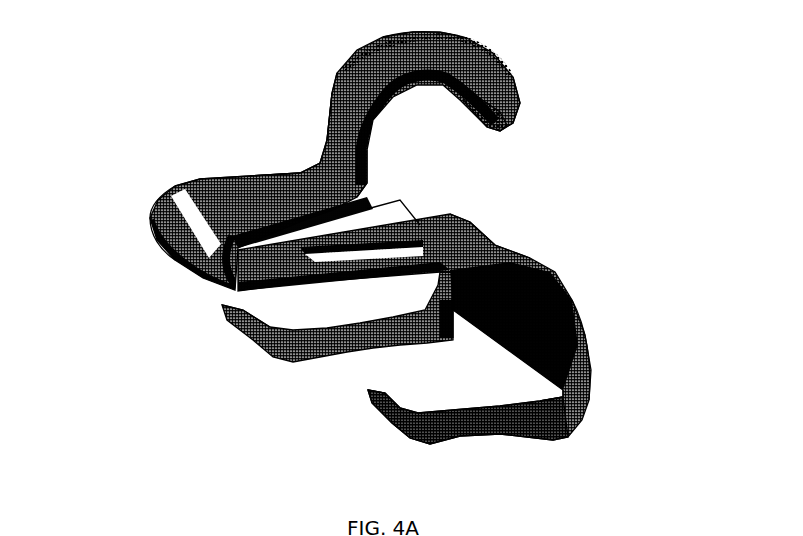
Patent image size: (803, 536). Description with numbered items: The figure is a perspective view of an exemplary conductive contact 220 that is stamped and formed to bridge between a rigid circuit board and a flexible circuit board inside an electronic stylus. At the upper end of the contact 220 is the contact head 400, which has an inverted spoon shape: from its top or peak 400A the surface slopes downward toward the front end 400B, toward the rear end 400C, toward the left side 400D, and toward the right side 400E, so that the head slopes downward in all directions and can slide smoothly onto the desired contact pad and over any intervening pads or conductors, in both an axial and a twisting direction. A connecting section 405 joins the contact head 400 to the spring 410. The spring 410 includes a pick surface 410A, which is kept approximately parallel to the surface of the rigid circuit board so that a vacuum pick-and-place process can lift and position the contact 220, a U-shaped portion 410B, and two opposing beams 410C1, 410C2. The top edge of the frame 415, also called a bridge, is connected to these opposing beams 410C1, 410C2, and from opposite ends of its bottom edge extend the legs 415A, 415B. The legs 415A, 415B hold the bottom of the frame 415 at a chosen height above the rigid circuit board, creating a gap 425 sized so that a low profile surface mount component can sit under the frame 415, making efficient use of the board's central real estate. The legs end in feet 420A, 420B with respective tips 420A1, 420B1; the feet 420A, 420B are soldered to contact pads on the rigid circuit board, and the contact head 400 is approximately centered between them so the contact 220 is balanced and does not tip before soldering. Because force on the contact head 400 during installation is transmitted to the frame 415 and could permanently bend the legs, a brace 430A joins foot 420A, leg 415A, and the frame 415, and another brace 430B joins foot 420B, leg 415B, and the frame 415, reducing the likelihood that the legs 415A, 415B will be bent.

The contact 220 is at (246, 84).
The contact head 400 is at (535, 36).
The top or peak 400A is at (440, 40).
The front end 400B is at (517, 127).
The rear end 400C is at (330, 117).
The left side 400D is at (360, 50).
The right side 400E is at (463, 97).
The connecting section 405 is at (317, 165).
The spring 410 is at (158, 162).
The pick surface 410A is at (237, 173).
The U-shaped portion 410B is at (150, 202).
The opposing beam 410C1 is at (397, 213).
The opposing beam 410C2 is at (490, 247).
The frame 415 is at (578, 323).
The leg 415A is at (430, 340).
The leg 415B is at (590, 383).
The foot 420A is at (320, 360).
The tip 420A1 is at (240, 327).
The foot 420B is at (540, 430).
The tip 420B1 is at (373, 400).
The gap 425 is at (466, 350).
The brace 430A is at (400, 300).
The brace 430B is at (563, 393).